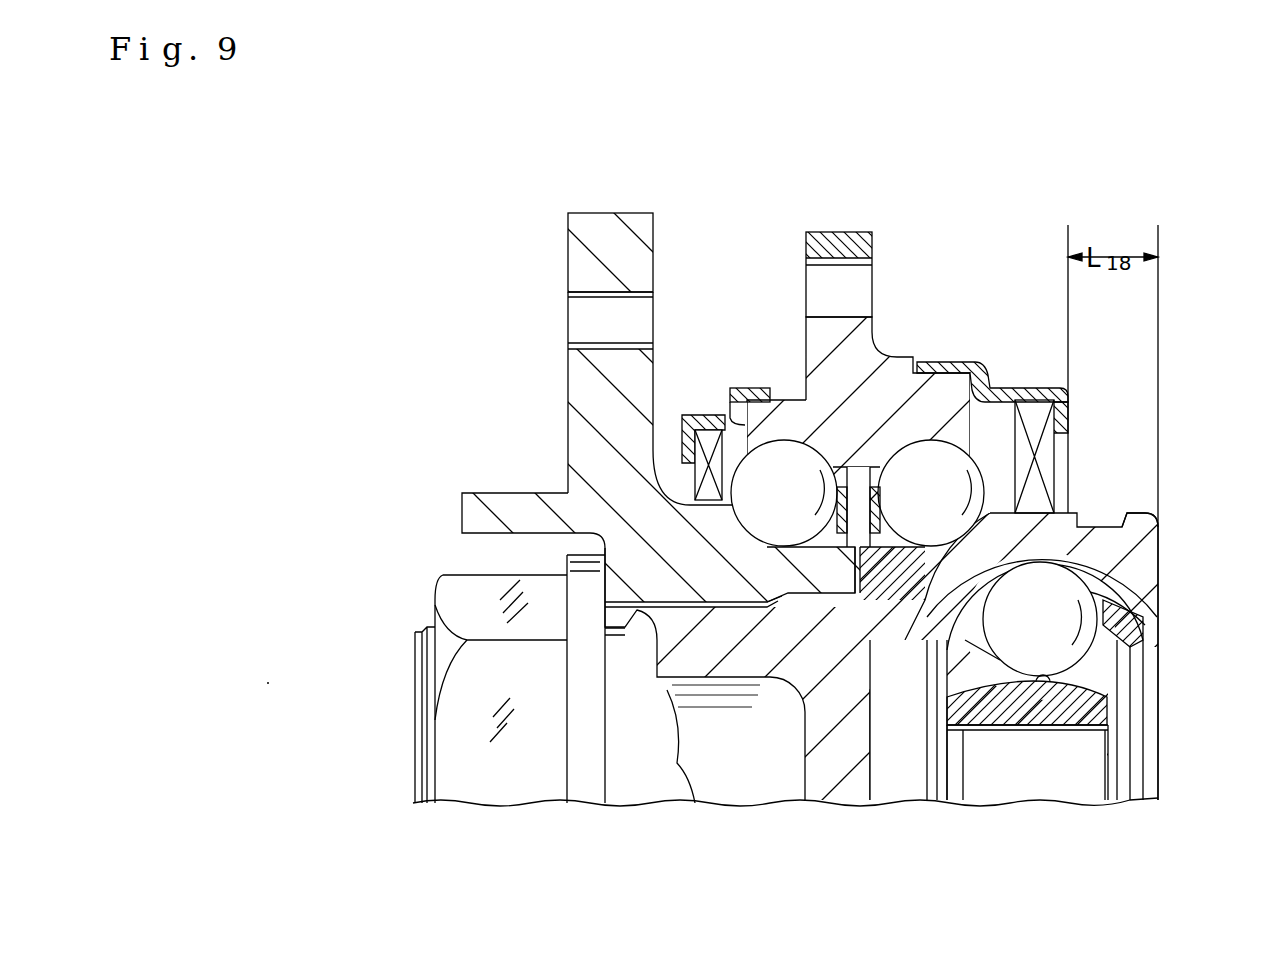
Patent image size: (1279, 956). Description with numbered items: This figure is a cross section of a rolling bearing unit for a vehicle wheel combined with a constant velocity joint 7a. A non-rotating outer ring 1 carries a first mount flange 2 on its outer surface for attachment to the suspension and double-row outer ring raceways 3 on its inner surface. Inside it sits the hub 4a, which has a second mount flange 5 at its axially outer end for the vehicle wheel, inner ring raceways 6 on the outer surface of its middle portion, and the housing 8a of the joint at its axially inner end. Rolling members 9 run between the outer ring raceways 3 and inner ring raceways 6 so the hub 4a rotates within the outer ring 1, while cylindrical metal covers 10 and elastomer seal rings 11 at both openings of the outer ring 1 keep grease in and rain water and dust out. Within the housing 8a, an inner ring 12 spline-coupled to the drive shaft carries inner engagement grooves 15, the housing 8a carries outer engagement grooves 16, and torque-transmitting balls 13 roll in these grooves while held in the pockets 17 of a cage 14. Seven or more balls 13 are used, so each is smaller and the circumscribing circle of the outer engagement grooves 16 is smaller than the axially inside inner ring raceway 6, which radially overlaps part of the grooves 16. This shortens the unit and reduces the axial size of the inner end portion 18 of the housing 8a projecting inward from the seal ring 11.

The outer ring 1 is at (876, 345).
The first mount flange 2 is at (847, 243).
The outer ring raceways 3 is at (790, 445).
The hub 4a is at (598, 462).
The second mount flange 5 is at (578, 262).
The inner ring raceways 6 is at (748, 520).
The constant velocity joint 7a is at (1080, 780).
The housing 8a is at (1065, 530).
The rolling members 9 is at (740, 480).
The covers 10 is at (752, 400).
The seal rings 11 is at (700, 430).
The inner ring 12 is at (1070, 708).
The balls 13 is at (1118, 645).
The cage 14 is at (1132, 650).
The inner engagement grooves 15 is at (1043, 685).
The outer engagement grooves 16 is at (1078, 592).
The pockets 17 is at (1005, 680).
The axially inner end portion 18 is at (1143, 516).